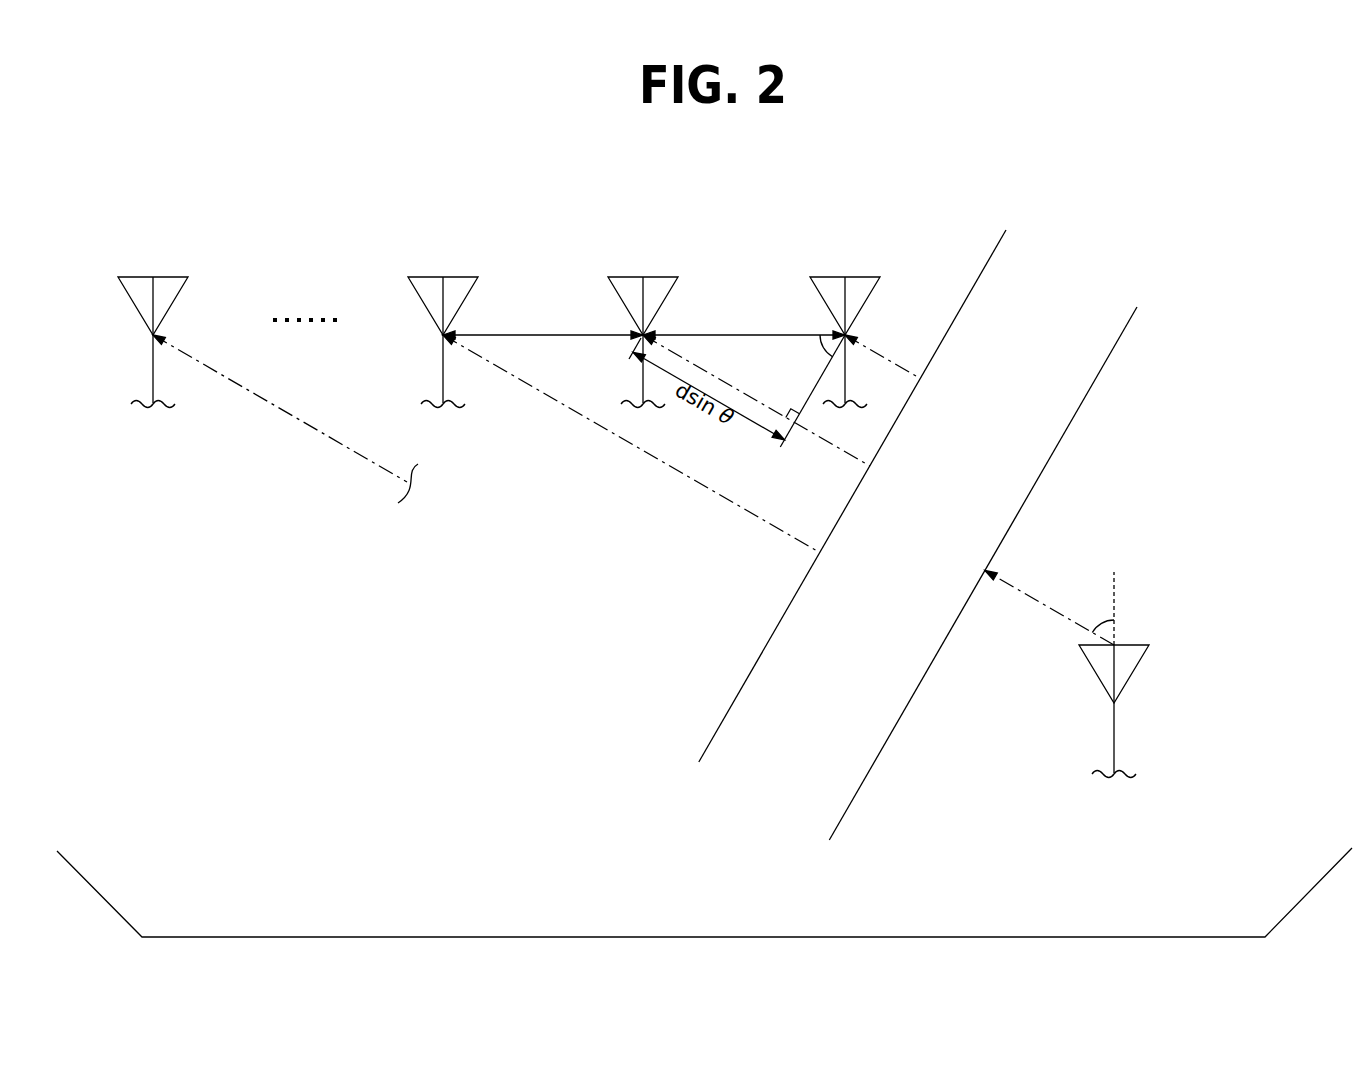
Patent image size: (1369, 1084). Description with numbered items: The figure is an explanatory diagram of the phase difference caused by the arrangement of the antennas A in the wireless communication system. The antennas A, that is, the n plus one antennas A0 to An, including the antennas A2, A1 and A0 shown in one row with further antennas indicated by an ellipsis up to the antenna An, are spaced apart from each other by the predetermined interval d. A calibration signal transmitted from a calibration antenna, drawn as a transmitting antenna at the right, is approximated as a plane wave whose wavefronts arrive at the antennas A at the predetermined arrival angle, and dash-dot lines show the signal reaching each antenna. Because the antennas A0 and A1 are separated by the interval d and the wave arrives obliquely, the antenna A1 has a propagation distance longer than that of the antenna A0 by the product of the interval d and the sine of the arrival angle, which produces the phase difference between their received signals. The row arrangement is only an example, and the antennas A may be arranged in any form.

The antennas A is at (815, 218).
The antenna An is at (137, 277).
The antenna A2 is at (428, 277).
The antenna A1 is at (628, 277).
The antenna A0 is at (830, 277).
The predetermined interval d is at (644, 325).